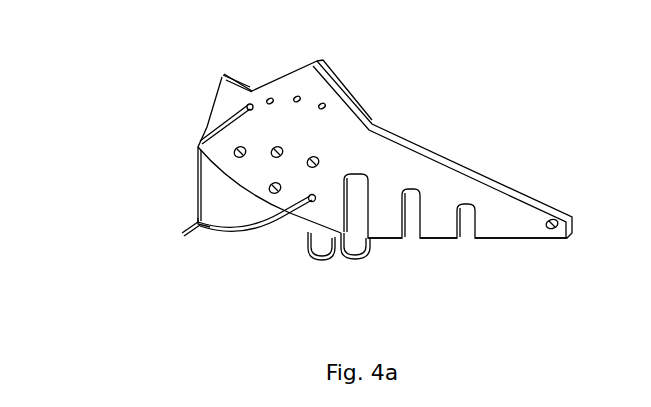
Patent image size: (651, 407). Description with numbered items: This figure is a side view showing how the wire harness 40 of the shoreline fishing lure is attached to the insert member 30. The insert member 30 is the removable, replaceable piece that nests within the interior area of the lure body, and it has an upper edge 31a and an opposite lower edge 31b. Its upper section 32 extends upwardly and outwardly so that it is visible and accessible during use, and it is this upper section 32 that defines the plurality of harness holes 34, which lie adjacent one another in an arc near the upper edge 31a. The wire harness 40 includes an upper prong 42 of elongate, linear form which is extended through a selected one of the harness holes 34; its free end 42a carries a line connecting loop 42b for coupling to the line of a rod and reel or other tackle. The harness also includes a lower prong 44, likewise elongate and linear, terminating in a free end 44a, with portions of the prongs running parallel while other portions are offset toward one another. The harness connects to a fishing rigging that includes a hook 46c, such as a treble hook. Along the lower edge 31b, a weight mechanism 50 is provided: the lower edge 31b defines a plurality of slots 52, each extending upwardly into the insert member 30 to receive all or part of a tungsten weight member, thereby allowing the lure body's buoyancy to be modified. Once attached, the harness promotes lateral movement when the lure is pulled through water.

The insert member 30 is at (462, 111).
The upper edge 31a is at (492, 178).
The lower edge 31b is at (495, 240).
The upper section 32 is at (313, 82).
The harness holes 34 is at (326, 104).
The wire harness 40 is at (171, 163).
The upper prong 42 is at (222, 122).
The free end 42a is at (193, 212).
The line connecting loop 42b is at (180, 238).
The lower prong 44 is at (275, 226).
The free end 44a is at (201, 224).
The hook 46c is at (308, 236).
The weight mechanism 50 is at (402, 262).
The slots 52 is at (455, 229).